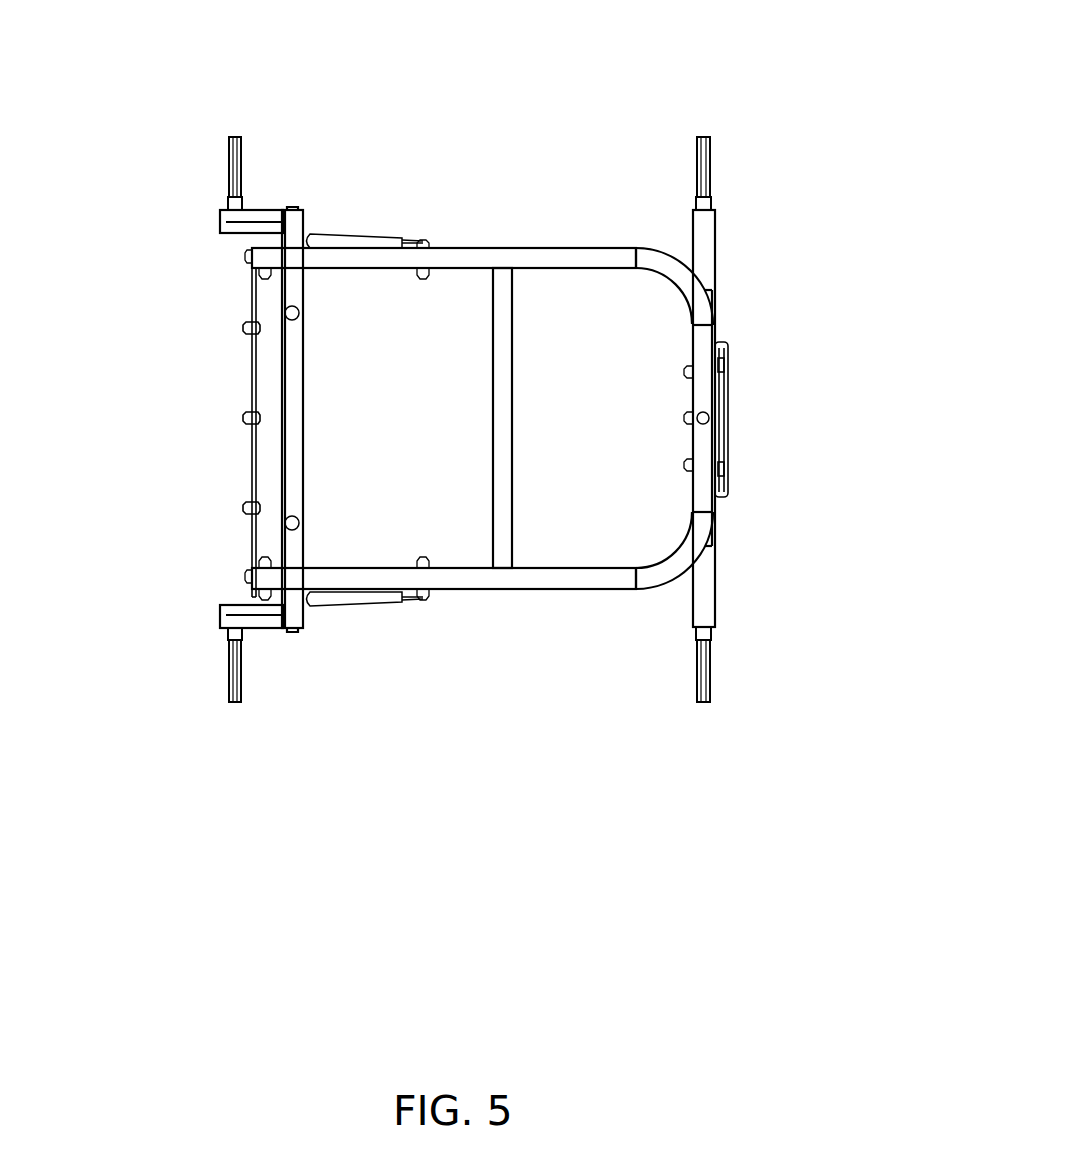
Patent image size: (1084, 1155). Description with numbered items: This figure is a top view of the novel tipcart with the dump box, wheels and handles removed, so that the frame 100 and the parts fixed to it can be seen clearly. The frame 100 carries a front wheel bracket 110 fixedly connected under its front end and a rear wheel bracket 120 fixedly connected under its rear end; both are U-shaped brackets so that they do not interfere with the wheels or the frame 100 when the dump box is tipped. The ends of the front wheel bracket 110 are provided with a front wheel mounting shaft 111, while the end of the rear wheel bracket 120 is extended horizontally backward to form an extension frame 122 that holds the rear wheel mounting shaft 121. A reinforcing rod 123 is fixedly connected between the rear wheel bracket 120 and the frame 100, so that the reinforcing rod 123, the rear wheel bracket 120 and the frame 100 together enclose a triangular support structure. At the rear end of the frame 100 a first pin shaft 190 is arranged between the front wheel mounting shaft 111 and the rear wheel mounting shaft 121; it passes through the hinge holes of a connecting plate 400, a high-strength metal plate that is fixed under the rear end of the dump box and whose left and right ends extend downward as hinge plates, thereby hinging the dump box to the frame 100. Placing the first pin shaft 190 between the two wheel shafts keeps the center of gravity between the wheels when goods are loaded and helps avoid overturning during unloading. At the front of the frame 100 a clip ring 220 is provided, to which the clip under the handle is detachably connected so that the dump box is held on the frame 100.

The frame 100 is at (565, 242).
The front wheel bracket 110 is at (737, 232).
The front wheel mounting shaft 111 is at (730, 122).
The rear wheel bracket 120 is at (274, 467).
The rear wheel mounting shaft 121 is at (250, 118).
The extension frame 122 is at (212, 239).
The reinforcing rod 123 is at (364, 219).
The first pin shaft 190 is at (232, 586).
The clip ring 220 is at (748, 396).
The connecting plate 400 is at (231, 384).